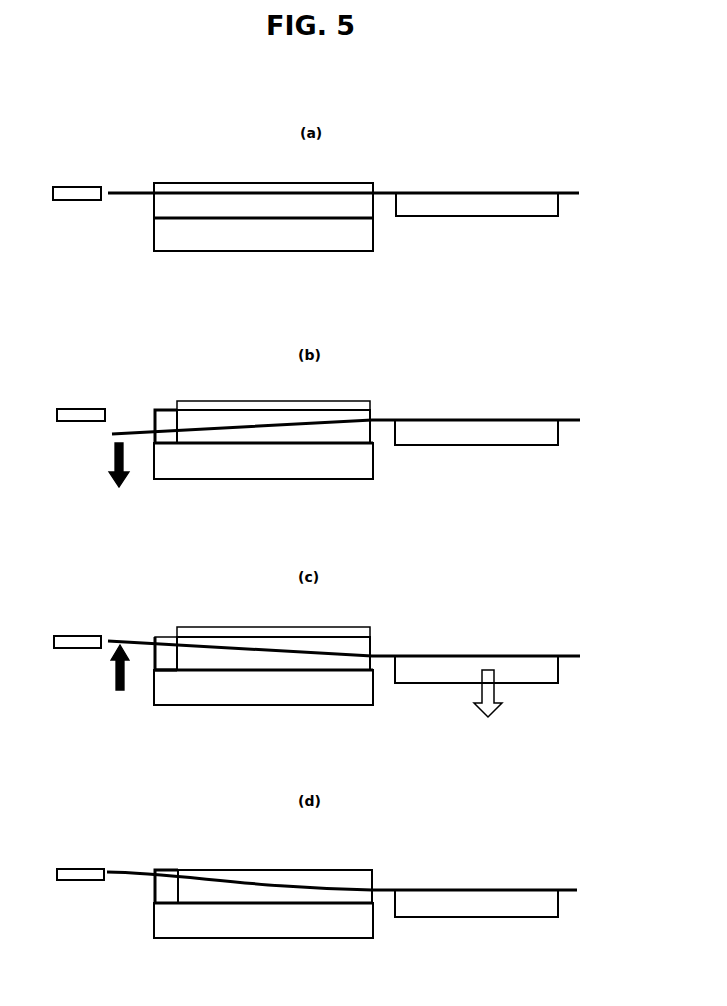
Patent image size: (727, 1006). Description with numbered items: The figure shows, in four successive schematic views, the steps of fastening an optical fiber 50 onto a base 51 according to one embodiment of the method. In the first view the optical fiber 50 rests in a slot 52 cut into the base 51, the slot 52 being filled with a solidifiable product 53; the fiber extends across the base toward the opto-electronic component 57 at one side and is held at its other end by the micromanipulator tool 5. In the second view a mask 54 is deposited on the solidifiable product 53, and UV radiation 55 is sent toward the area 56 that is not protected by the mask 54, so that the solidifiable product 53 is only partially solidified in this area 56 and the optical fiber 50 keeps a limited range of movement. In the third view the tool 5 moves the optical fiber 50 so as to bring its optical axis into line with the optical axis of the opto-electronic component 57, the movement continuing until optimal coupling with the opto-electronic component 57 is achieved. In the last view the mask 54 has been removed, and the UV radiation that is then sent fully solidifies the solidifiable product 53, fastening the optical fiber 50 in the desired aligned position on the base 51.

The micromanipulator tool 5 is at (512, 208).
The optical fiber 50 is at (377, 195).
The base 51 is at (268, 244).
The slot 52 is at (170, 215).
The solidifiable product 53 is at (337, 200).
The mask 54 is at (333, 405).
The UV radiation 55 is at (165, 396).
The area 56 is at (165, 408).
The opto-electronic component 57 is at (83, 192).